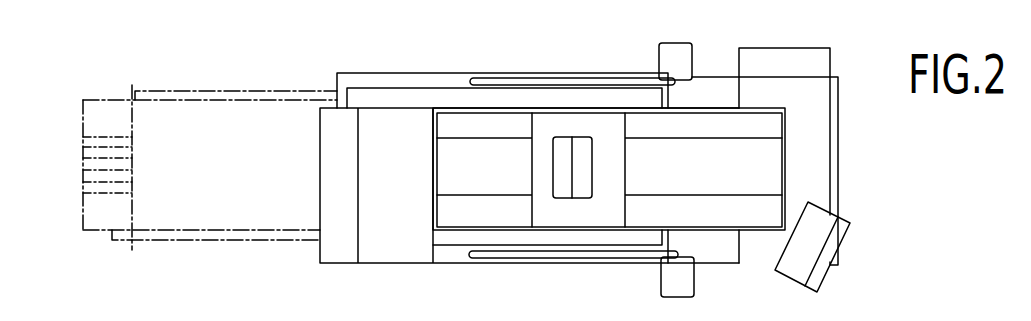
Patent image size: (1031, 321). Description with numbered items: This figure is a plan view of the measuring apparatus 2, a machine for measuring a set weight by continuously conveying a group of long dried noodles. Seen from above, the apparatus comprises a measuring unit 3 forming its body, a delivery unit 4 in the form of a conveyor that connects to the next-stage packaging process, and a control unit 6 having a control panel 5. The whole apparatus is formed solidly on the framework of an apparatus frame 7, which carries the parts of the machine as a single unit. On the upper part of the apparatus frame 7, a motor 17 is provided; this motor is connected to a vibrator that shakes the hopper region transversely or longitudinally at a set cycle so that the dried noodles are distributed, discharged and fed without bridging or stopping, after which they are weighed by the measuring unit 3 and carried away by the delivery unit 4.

The measuring apparatus 2 is at (871, 232).
The measuring unit 3 is at (497, 272).
The delivery unit 4 is at (221, 88).
The control panel 5 is at (800, 272).
The control unit 6 is at (845, 135).
The apparatus frame 7 is at (411, 83).
The motor 17 is at (583, 147).